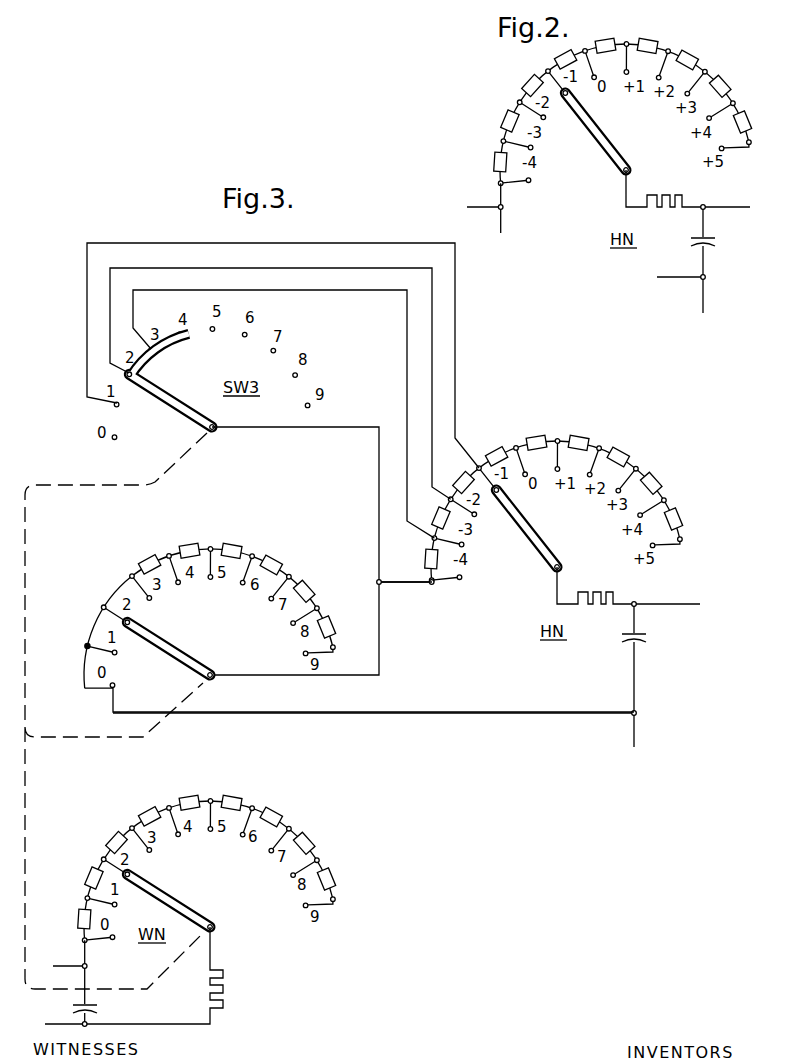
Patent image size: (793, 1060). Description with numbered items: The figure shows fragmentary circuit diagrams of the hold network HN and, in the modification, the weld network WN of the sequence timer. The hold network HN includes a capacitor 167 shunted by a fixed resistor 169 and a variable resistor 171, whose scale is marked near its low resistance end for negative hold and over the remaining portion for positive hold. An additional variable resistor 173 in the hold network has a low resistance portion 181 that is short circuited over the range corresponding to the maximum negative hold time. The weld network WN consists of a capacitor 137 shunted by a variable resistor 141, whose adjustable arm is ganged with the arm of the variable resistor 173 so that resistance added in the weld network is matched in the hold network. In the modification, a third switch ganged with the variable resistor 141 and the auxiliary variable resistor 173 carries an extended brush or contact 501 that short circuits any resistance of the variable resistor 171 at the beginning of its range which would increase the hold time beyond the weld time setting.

In FIG. 2, the variable resistor 171 is at (623, 108).
In FIG. 3, the variable resistor 171 is at (554, 503).
In FIG. 2, the fixed resistor 169 is at (688, 188).
In FIG. 3, the fixed resistor 169 is at (628, 585).
In FIG. 2, the capacitor 167 is at (721, 240).
In FIG. 3, the capacitor 167 is at (652, 638).
In FIG. 3, the extended brush or contact 501 is at (174, 381).
In FIG. 3, the additional variable resistor 173 is at (234, 585).
In FIG. 3, the low resistance portion 181 is at (97, 632).
In FIG. 3, the variable resistor 141 is at (207, 856).
In FIG. 3, the capacitor 137 is at (103, 1008).